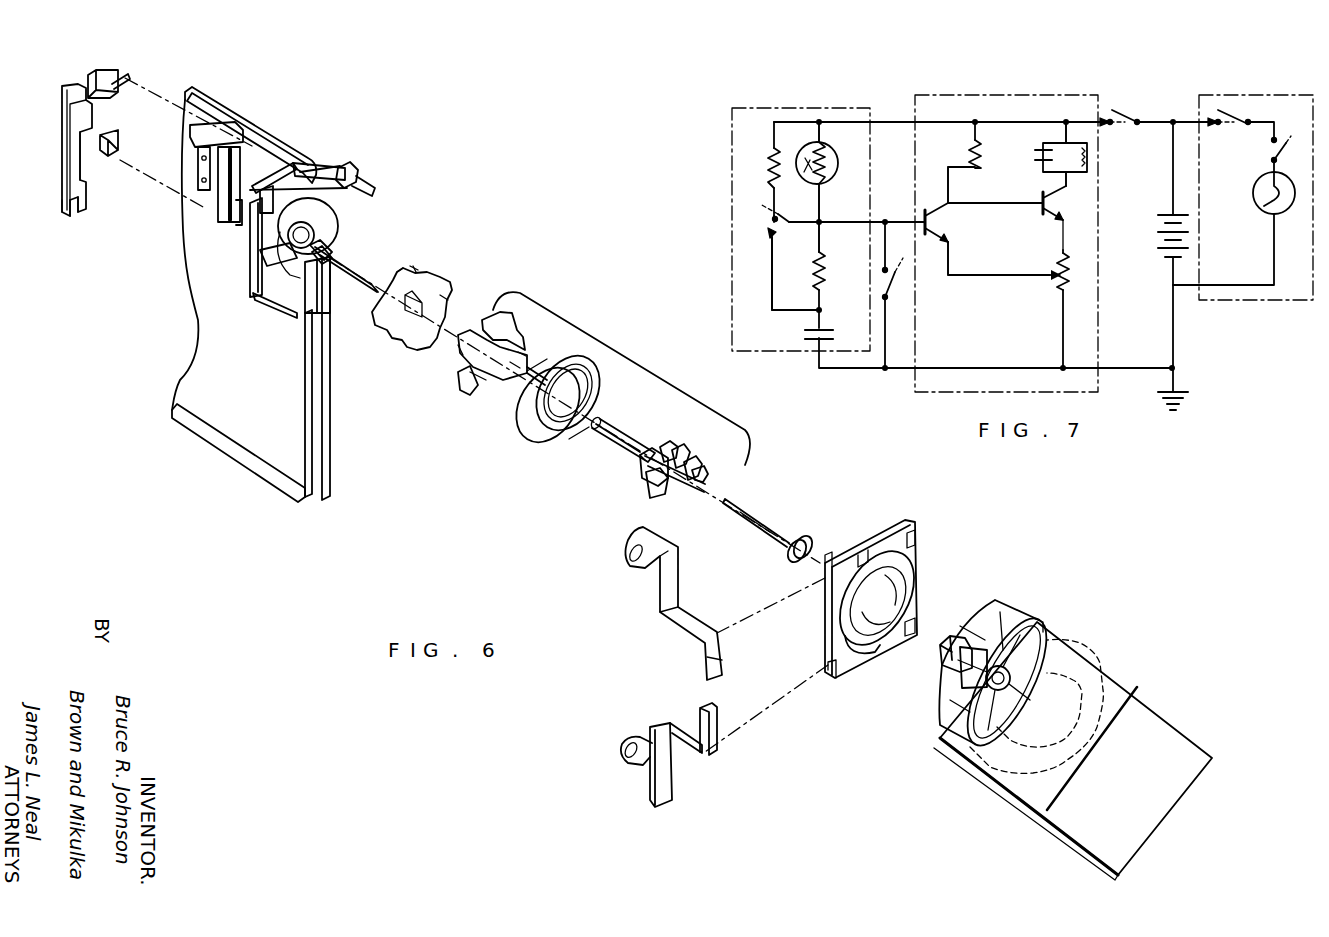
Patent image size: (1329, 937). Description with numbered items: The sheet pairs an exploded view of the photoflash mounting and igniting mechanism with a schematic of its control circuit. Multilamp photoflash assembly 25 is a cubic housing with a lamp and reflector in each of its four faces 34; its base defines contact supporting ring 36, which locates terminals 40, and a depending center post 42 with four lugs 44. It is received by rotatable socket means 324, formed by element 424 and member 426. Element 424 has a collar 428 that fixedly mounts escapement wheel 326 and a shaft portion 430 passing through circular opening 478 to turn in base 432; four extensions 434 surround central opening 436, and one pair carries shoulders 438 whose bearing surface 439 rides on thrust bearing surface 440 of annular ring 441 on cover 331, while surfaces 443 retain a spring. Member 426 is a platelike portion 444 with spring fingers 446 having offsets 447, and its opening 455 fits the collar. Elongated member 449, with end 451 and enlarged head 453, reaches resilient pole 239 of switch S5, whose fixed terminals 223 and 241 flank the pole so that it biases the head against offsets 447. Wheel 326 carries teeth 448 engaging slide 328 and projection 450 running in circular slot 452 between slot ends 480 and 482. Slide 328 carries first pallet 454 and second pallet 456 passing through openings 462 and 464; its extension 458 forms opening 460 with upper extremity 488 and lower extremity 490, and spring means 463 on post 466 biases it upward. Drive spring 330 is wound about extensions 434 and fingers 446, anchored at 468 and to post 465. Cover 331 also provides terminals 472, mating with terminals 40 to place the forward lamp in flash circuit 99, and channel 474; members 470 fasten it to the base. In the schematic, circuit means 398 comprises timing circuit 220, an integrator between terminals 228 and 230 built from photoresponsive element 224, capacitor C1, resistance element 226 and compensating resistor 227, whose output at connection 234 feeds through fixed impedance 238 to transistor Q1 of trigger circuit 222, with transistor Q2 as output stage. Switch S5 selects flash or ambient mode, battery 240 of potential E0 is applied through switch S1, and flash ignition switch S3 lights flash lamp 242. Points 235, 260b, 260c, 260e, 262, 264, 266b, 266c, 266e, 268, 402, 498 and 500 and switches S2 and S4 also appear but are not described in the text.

In FIG. 6, the multilamp photoflash assembly 25 is at (978, 790).
In FIG. 6, the faces 34 is at (1114, 682).
In FIG. 6, the contact supporting ring 36 is at (1005, 626).
In FIG. 6, the terminals 40 is at (958, 688).
In FIG. 6, the cylindrical center post 42 is at (948, 640).
In FIG. 6, the lugs 44 is at (974, 645).
In FIG. 7, the flash circuit 99 is at (1265, 94).
In FIG. 7, the timing circuit 220 is at (744, 110).
In FIG. 7, the trigger circuit 222 is at (1012, 95).
In FIG. 6, the terminal 223 is at (240, 236).
In FIG. 7, the terminal 223 is at (776, 242).
In FIG. 7, the photoresponsive element 224 is at (812, 128).
In FIG. 7, the resistance element 226 is at (820, 268).
In FIG. 7, the compensating resistor 227 is at (770, 166).
In FIG. 7, the terminal 228 is at (1078, 108).
In FIG. 7, the terminal 230 is at (1178, 368).
In FIG. 7, the connection 234 is at (820, 222).
In FIG. 7, the lead 235 is at (819, 122).
In FIG. 7, the fixed impedance 238 is at (790, 220).
In FIG. 6, the arm 239 is at (244, 170).
In FIG. 7, the arm 239 is at (768, 230).
In FIG. 7, the voltage source 240 is at (1165, 228).
In FIG. 6, the terminal 241 is at (222, 196).
In FIG. 7, the terminal 241 is at (772, 214).
In FIG. 7, the flash lamp 242 is at (1262, 208).
In FIG. 7, the transistor base 260b is at (927, 208).
In FIG. 7, the transistor collector 260c is at (946, 212).
In FIG. 7, the transistor emitter 260e is at (938, 240).
In FIG. 7, the resistor 262 is at (981, 160).
In FIG. 7, the potentiometer 264 is at (1054, 280).
In FIG. 7, the transistor base 266b is at (1040, 208).
In FIG. 7, the transistor collector 266c is at (1063, 190).
In FIG. 7, the transistor emitter 266e is at (1056, 226).
In FIG. 7, the lead 268 is at (995, 211).
In FIG. 6, the rotatable socket means 324 is at (637, 363).
In FIG. 6, the escapement wheel 326 is at (449, 300).
In FIG. 6, the slide 328 is at (52, 134).
In FIG. 6, the drive spring 330 is at (535, 415).
In FIG. 6, the cover 331 is at (917, 545).
In FIG. 7, the circuit means 398 is at (897, 104).
In FIG. 7, the relay coil 402 is at (1087, 160).
In FIG. 6, the element 424 is at (640, 480).
In FIG. 6, the member 426 is at (450, 362).
In FIG. 6, the collar 428 is at (642, 474).
In FIG. 6, the shaft portion 430 is at (614, 436).
In FIG. 6, the base 432 is at (334, 166).
In FIG. 6, the extensions 434 is at (692, 474).
In FIG. 6, the central opening 436 is at (654, 490).
In FIG. 6, the shoulders 438 is at (680, 445).
In FIG. 6, the bearing surface 439 is at (694, 458).
In FIG. 6, the thrust bearing surface 440 is at (870, 585).
In FIG. 6, the annular ring 441 is at (865, 596).
In FIG. 6, the surfaces 443 is at (662, 446).
In FIG. 6, the platelike portion 444 is at (462, 356).
In FIG. 6, the spring fingers 446 is at (486, 324).
In FIG. 6, the offsets 447 is at (522, 356).
In FIG. 6, the teeth 448 is at (450, 283).
In FIG. 6, the elongated member 449 is at (752, 520).
In FIG. 6, the projection 450 is at (415, 262).
In FIG. 6, the end 451 is at (724, 500).
In FIG. 6, the circular slot 452 is at (322, 212).
In FIG. 6, the enlarged head 453 is at (810, 555).
In FIG. 6, the first pallet 454 is at (118, 156).
In FIG. 6, the opening 455 is at (457, 382).
In FIG. 6, the second pallet 456 is at (118, 72).
In FIG. 6, the extension 458 is at (84, 186).
In FIG. 6, the opening 460 is at (68, 198).
In FIG. 6, the opening 462 is at (300, 314).
In FIG. 6, the spring means 463 is at (346, 178).
In FIG. 6, the opening 464 is at (290, 163).
In FIG. 6, the post 465 is at (258, 268).
In FIG. 6, the post 466 is at (108, 96).
In FIG. 6, the spring mounting point 468 is at (516, 366).
In FIG. 6, the members 470 is at (365, 190).
In FIG. 6, the terminals 472 is at (716, 648).
In FIG. 6, the channel 474 is at (855, 650).
In FIG. 6, the circular opening 478 is at (314, 233).
In FIG. 6, the slot end 480 is at (332, 262).
In FIG. 6, the slot end 482 is at (310, 243).
In FIG. 6, the upper extremity 488 is at (60, 178).
In FIG. 6, the lower extremity 490 is at (72, 214).
In FIG. 6, the notch 498 is at (400, 266).
In FIG. 6, the notch 500 is at (418, 264).
In FIG. 7, the capacitor C1 is at (807, 334).
In FIG. 7, the battery potential E0 is at (1146, 252).
In FIG. 7, the transistor Q1 is at (946, 222).
In FIG. 7, the transistor Q2 is at (1060, 207).
In FIG. 7, the switch S1 is at (1120, 103).
In FIG. 7, the switch S2 is at (899, 286).
In FIG. 7, the flash ignition switch S3 is at (1234, 108).
In FIG. 7, the switch S4 is at (1290, 156).
In FIG. 6, the switch S5 is at (270, 175).
In FIG. 7, the switch S5 is at (770, 219).